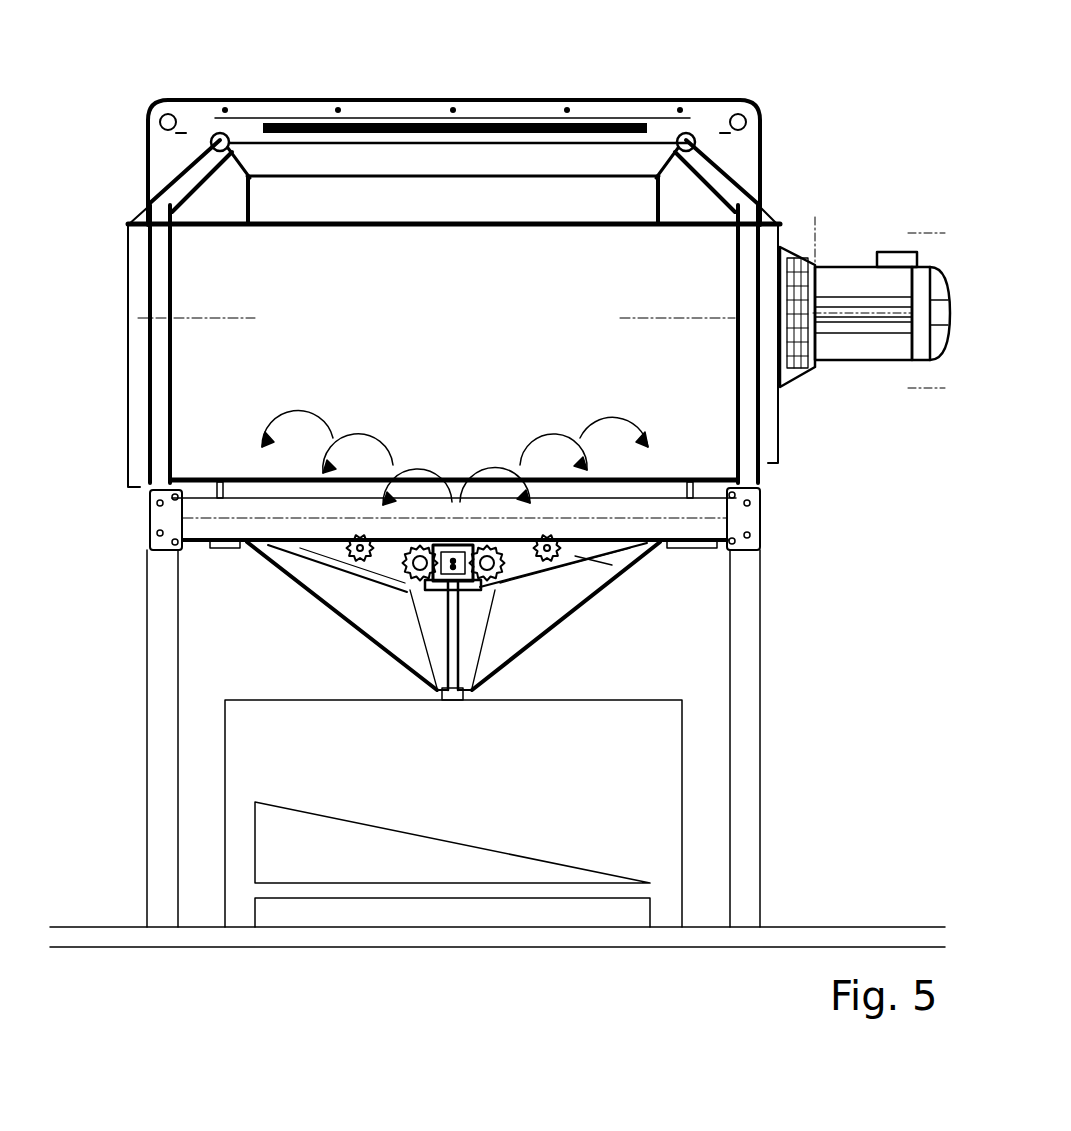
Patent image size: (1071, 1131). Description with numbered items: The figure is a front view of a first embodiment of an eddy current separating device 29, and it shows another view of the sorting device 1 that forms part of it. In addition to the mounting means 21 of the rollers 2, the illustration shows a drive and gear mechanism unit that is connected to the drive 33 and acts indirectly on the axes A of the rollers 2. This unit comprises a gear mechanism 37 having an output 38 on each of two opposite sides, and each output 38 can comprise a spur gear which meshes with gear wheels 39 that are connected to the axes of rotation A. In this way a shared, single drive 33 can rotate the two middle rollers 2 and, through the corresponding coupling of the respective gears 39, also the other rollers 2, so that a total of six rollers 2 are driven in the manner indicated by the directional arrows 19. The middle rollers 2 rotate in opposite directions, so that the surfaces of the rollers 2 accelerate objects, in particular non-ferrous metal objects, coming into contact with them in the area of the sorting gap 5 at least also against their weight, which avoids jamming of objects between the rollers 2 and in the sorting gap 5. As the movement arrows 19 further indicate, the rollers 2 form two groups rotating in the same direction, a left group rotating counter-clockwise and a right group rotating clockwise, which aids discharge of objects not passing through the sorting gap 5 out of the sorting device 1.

The eddy current separating device 29 is at (540, 84).
The sorting device 1 is at (247, 272).
The directional arrows 19 is at (422, 483).
The drive 33 is at (456, 545).
The gear wheels 39 is at (292, 545).
The rollers 2 is at (400, 590).
The sorting gap 5 is at (543, 570).
The gear mechanism 37 is at (452, 700).
The output 38 is at (432, 592).
The mounting means 21 is at (588, 542).
The axes of rotation A is at (580, 560).